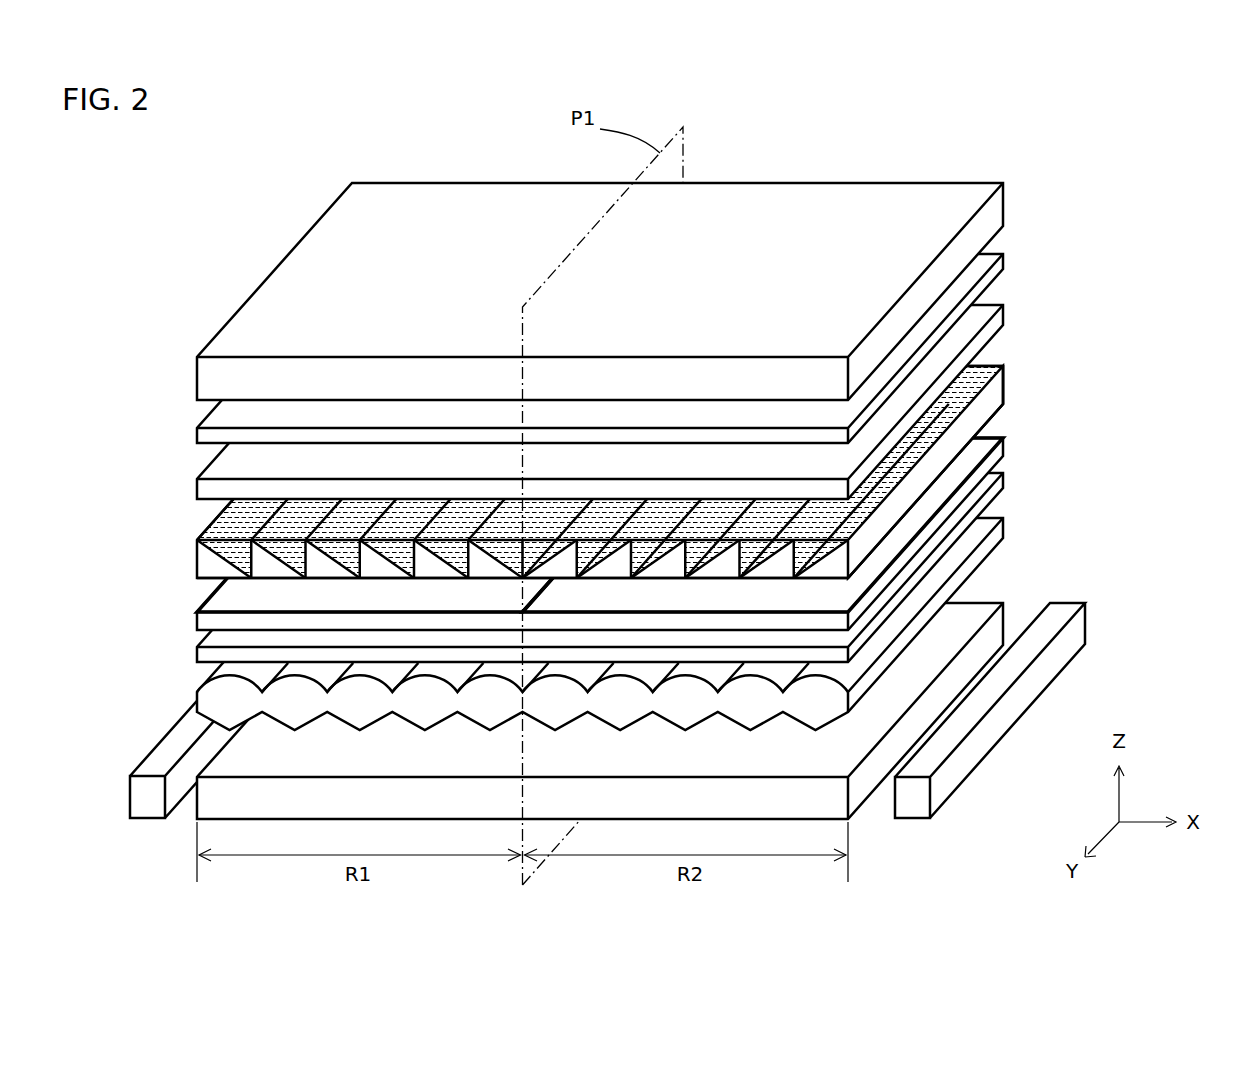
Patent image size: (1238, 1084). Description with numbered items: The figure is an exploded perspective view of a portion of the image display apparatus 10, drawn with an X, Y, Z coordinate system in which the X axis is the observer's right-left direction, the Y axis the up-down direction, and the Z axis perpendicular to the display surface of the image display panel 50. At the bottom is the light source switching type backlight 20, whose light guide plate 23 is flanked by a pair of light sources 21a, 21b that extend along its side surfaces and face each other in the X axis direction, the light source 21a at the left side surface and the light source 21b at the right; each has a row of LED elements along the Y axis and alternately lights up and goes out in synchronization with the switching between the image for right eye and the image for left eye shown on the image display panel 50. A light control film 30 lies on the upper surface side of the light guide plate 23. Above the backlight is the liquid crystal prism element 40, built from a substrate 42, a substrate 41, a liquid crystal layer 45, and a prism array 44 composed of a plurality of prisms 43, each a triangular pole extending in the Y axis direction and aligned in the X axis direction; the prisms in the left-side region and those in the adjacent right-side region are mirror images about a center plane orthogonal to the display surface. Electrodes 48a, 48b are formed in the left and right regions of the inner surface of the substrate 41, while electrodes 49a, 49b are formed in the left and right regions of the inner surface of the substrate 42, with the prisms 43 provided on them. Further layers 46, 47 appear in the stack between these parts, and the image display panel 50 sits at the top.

The image display apparatus 10 is at (664, 510).
The light source switching type backlight 20 is at (656, 680).
The light source 21a is at (145, 818).
The light source 21b is at (913, 818).
The light guide plate 23 is at (1003, 603).
The light control film 30 is at (1003, 522).
The liquid crystal prism element 40 is at (632, 444).
The substrate 41 is at (197, 478).
The substrate 42 is at (606, 530).
The prism 43 is at (521, 472).
The prism array 44 is at (197, 542).
The liquid crystal layer 45 is at (589, 451).
The optical sheet 46 is at (1003, 262).
The optical sheet 47 is at (1003, 480).
The electrode 48a is at (218, 507).
The electrode 48b is at (988, 352).
The electrode 49a is at (222, 600).
The electrode 49b is at (983, 440).
The image display panel 50 is at (1003, 203).